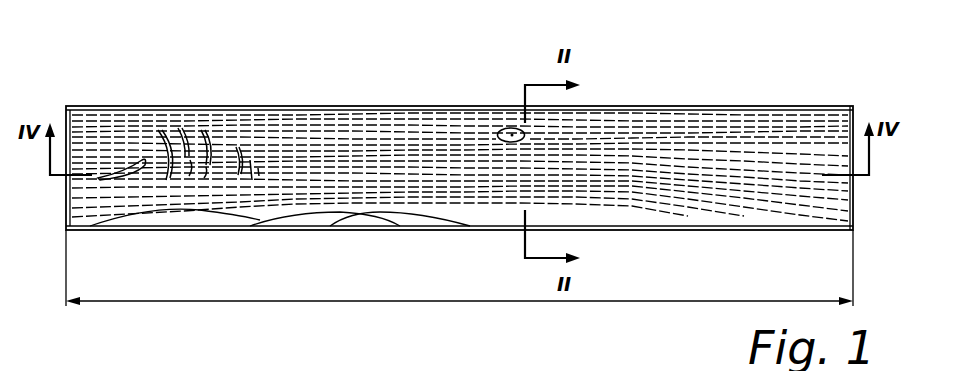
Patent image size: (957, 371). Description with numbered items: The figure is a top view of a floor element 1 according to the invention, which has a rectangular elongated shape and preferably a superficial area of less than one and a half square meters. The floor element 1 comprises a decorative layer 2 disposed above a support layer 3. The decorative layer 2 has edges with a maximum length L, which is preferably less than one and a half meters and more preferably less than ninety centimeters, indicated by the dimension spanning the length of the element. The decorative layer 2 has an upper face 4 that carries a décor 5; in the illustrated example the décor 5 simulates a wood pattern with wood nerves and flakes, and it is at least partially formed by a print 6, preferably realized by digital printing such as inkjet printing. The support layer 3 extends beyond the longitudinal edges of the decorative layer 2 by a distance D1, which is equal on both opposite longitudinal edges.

The floor element 1 is at (180, 68).
The decorative layer 2 is at (293, 108).
The support layer 3 is at (757, 106).
The upper face 4 is at (315, 222).
The décor 5 is at (430, 135).
The print 6 is at (378, 214).
The maximum length L is at (458, 302).
The distance D1 is at (214, 370).